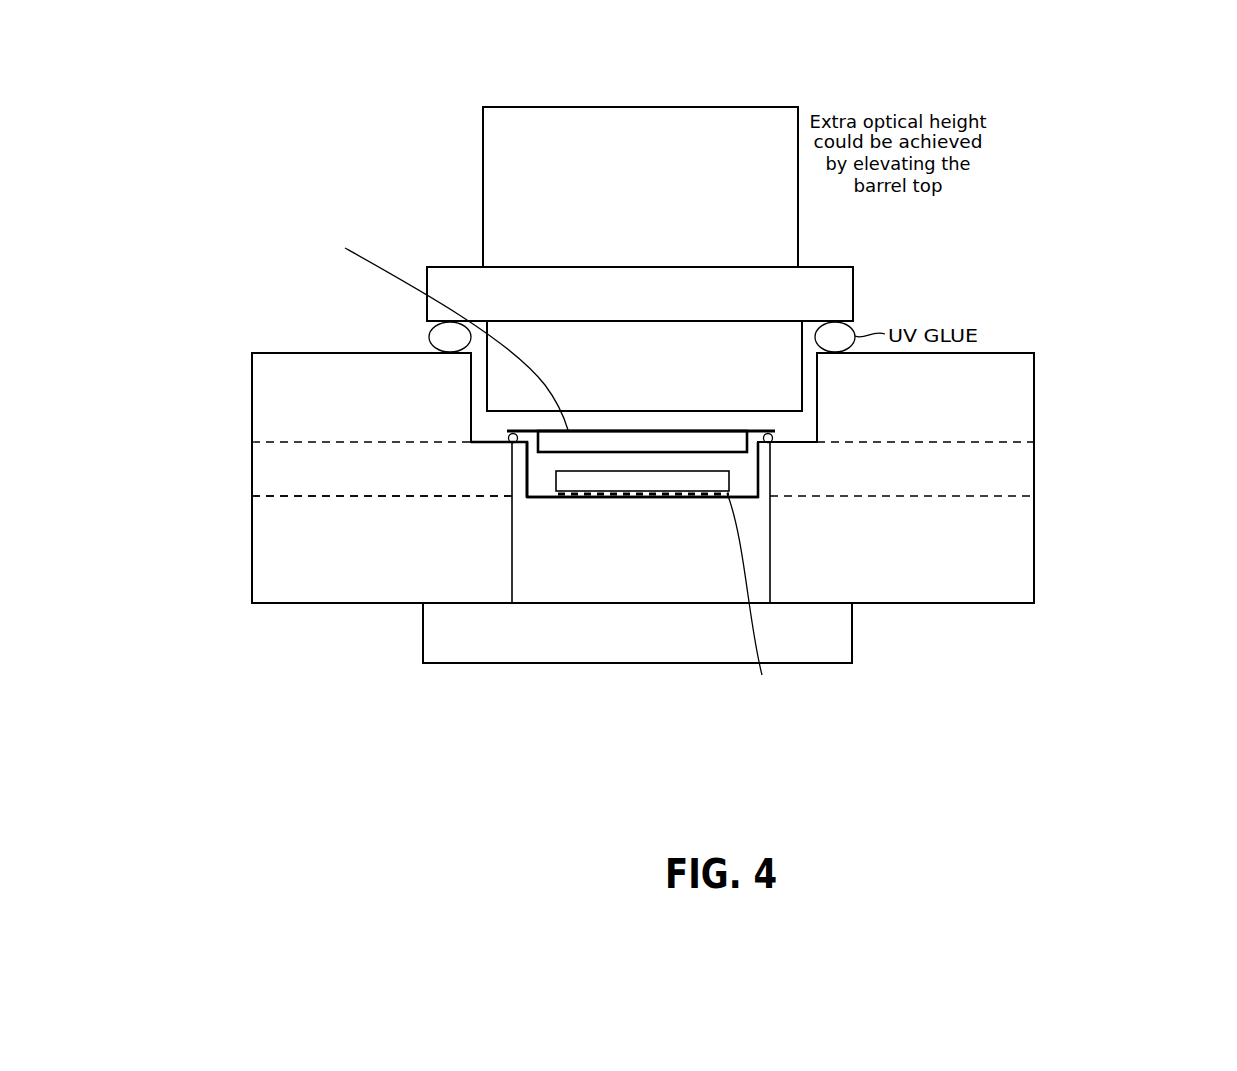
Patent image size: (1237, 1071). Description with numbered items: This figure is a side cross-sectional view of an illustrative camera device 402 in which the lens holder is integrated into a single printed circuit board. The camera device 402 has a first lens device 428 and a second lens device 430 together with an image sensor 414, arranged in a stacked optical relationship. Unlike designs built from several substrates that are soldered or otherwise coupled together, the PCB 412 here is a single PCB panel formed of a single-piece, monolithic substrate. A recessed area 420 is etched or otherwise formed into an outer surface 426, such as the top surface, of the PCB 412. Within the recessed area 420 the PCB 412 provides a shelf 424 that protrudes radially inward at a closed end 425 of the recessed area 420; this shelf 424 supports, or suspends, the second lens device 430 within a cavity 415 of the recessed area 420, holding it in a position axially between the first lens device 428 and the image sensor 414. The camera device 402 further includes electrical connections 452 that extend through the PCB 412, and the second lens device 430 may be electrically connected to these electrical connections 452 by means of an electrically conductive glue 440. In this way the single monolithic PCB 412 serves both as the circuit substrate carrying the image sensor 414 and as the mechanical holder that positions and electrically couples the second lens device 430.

The camera device 402 is at (322, 162).
The PCB 412 is at (243, 417).
The image sensor 414 is at (570, 497).
The cavity 415 is at (475, 430).
The recessed area 420 is at (798, 420).
The shelf 424 is at (473, 480).
The closed end 425 is at (755, 524).
The outer surface 426 is at (995, 352).
The first lens device 428 is at (592, 126).
The second lens device 430 is at (703, 443).
The electrically conductive glue 440 is at (778, 441).
The electrical connection 452 is at (775, 540).